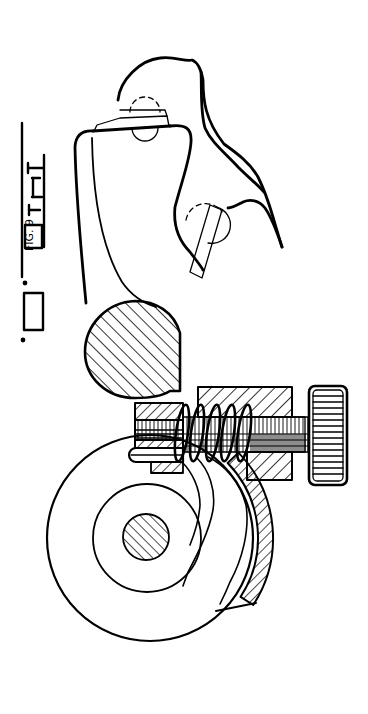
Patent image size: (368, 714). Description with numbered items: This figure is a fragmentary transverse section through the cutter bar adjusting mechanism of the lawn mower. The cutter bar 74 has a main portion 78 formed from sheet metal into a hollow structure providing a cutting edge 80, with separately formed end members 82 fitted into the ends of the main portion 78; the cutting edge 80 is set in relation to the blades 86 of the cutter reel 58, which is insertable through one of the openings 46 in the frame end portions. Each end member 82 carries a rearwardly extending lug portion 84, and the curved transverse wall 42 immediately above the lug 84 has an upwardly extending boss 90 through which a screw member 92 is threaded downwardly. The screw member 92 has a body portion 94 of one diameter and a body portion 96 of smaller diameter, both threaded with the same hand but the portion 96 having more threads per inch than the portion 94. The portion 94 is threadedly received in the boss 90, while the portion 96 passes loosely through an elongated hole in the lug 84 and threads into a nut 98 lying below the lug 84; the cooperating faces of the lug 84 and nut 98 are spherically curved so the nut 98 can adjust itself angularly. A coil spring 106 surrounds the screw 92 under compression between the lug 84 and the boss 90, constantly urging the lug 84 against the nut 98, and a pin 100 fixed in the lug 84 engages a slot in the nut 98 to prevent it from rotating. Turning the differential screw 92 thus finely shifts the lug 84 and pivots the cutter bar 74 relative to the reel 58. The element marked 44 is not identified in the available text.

The cutter reel 58 is at (190, 67).
The cutter bar 74 is at (82, 231).
The main portion 78 is at (113, 263).
The cutting edge 80 is at (92, 130).
The blades 86 is at (117, 132).
The end members 82 is at (173, 334).
The nut 98 is at (134, 406).
The body portion of smaller diameter 96 is at (132, 438).
The body portion of one diameter 94 is at (290, 462).
The screw member 92 is at (197, 400).
The boss 90 is at (277, 390).
The openings 46 is at (329, 387).
The pin 100 is at (207, 477).
The coil spring 106 is at (220, 480).
The lug portion 84 is at (185, 488).
The curved wall 42 is at (273, 541).
The flange 44 is at (211, 614).